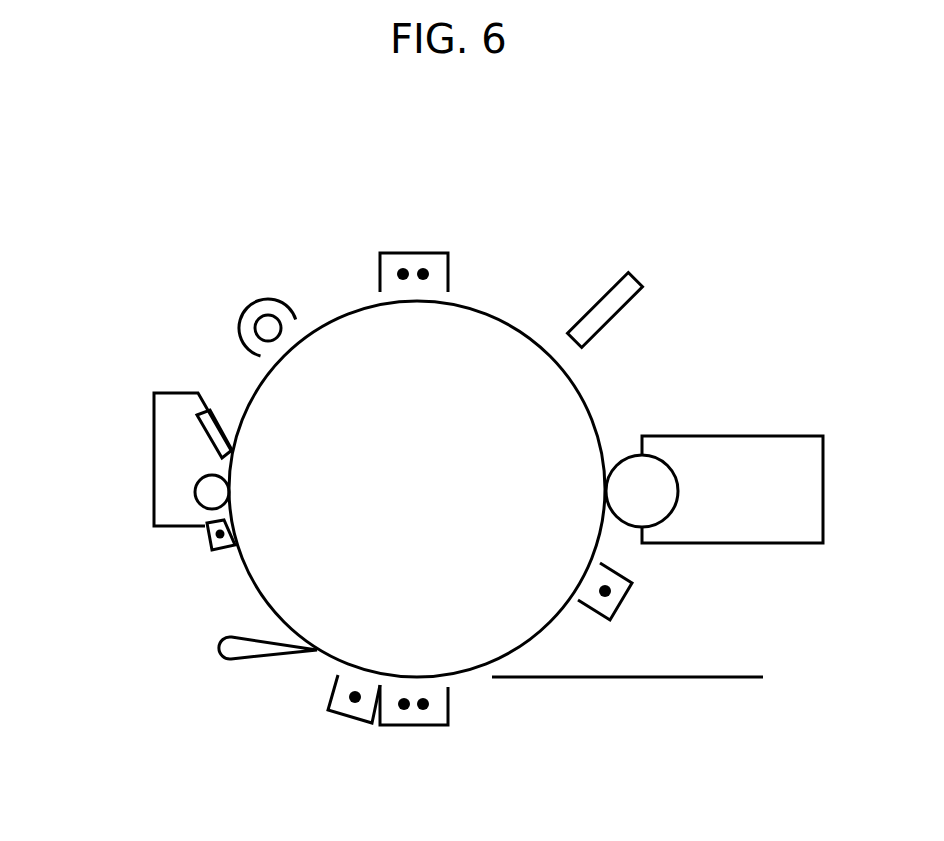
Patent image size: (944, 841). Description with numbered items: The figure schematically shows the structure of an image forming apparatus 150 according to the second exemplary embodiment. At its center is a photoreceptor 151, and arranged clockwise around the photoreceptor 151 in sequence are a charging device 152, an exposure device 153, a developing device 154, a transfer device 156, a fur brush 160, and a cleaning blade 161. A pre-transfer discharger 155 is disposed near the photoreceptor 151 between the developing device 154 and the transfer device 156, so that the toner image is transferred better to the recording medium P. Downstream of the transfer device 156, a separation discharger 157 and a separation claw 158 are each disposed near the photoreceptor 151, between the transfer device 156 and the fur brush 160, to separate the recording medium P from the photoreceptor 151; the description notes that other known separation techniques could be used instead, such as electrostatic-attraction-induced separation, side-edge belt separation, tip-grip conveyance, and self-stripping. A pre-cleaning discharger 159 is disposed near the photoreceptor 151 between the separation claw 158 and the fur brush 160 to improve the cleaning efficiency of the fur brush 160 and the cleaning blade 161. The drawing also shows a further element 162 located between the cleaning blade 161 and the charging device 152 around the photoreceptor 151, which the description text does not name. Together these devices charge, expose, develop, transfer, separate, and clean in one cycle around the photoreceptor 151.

The image forming apparatus 150 is at (540, 198).
The photoreceptor 151 is at (362, 308).
The charging device 152 is at (423, 252).
The exposure device 153 is at (605, 292).
The developing device 154 is at (717, 437).
The pre-transfer discharger 155 is at (627, 600).
The transfer device 156 is at (433, 725).
The separation discharger 157 is at (340, 720).
The separation claw 158 is at (237, 652).
The pre-cleaning discharger 159 is at (207, 547).
The fur brush 160 is at (193, 489).
The cleaning blade 161 is at (208, 437).
The lubricant applying device 162 is at (248, 320).
The recording medium P is at (655, 678).